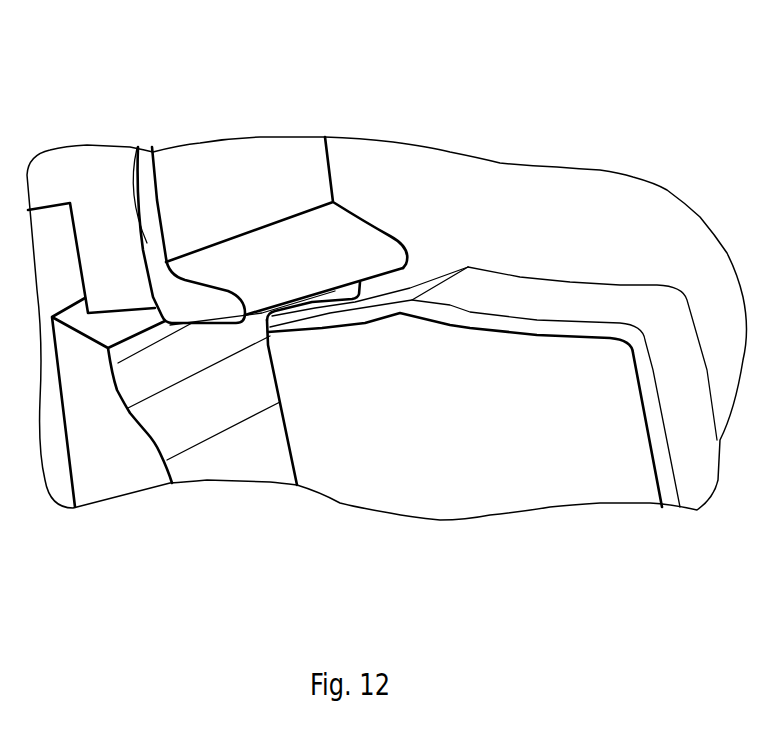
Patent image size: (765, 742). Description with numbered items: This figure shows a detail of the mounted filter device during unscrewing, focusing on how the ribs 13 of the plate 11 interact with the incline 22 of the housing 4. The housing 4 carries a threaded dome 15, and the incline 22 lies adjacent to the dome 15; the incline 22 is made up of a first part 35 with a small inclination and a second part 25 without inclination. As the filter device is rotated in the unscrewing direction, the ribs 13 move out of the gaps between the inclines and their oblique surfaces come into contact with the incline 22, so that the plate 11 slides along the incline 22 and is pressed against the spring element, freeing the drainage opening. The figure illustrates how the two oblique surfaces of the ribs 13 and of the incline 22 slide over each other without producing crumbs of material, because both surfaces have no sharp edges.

The housing 4 is at (663, 248).
The plate 11 is at (288, 165).
The ribs 13 is at (252, 185).
The dome 15 is at (572, 190).
The incline 22 is at (538, 483).
The second part of the incline 25 is at (567, 297).
The first part of the incline 35 is at (392, 298).